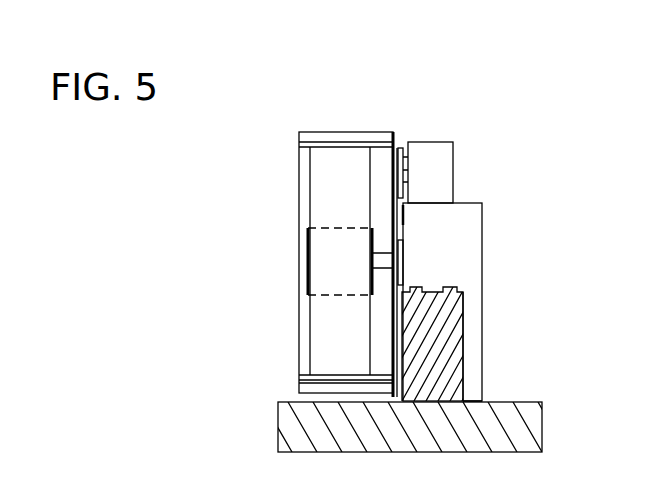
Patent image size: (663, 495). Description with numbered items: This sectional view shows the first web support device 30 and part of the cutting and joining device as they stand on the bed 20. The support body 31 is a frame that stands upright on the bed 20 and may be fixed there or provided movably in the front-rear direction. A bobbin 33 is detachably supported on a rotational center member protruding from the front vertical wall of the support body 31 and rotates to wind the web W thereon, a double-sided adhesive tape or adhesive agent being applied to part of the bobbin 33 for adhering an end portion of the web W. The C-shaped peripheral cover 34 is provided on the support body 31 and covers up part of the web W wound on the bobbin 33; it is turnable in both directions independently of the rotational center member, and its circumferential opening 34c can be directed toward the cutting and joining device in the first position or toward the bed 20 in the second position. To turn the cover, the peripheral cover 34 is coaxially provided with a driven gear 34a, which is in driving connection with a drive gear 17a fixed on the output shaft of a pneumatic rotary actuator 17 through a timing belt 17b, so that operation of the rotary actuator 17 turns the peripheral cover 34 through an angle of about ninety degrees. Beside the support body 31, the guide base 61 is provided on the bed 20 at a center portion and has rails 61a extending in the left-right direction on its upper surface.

The bed 20 is at (278, 423).
The peripheral cover 34 is at (297, 133).
The circumferential opening 34c is at (333, 159).
The web W is at (310, 338).
The bobbin 33 is at (307, 265).
The first web support device 30 is at (388, 118).
The drive gear 17a is at (418, 148).
The pneumatic rotary actuator 17 is at (458, 158).
The support body 31 is at (482, 218).
The timing belt 17b is at (403, 222).
The driven gear 34a is at (403, 247).
The rail 61a is at (447, 287).
The guide base 61 is at (465, 357).